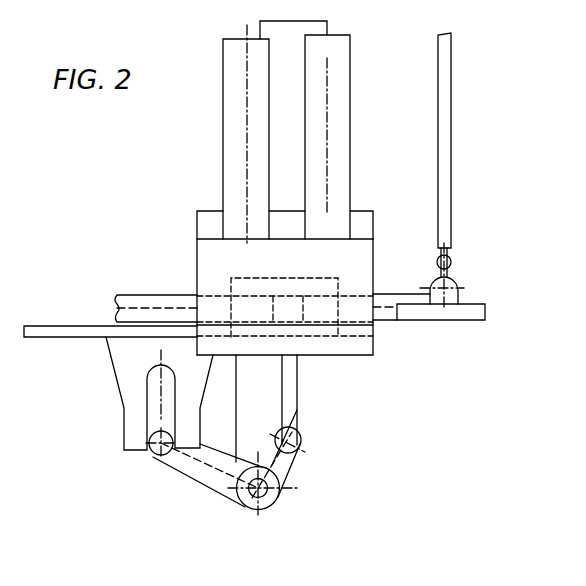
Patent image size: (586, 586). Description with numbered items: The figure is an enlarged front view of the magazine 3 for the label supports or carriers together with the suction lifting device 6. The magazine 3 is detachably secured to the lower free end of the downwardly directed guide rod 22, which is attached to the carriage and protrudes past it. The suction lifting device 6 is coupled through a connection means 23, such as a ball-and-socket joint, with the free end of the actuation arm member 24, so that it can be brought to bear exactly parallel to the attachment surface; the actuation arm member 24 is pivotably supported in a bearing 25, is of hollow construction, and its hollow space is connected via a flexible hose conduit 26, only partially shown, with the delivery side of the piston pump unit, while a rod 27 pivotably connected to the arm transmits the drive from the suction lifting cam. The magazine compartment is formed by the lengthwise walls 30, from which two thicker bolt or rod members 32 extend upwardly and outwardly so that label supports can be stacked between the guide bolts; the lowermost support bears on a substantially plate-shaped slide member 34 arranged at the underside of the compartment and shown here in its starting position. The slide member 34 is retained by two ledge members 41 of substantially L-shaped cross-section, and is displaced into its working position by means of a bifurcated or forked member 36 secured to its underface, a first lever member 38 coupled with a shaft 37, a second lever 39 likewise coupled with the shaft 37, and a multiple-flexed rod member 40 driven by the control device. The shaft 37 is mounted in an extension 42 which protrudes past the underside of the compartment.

The magazine 3 is at (188, 220).
The suction lifting device 6 is at (447, 313).
The guide rod 22 is at (288, 71).
The connection means 23 is at (449, 292).
The actuation arm member 24 is at (390, 302).
The bearing 25 is at (231, 279).
The flexible hose conduit 26 is at (145, 303).
The rod 27 is at (445, 133).
The lengthwise walls 30 is at (207, 252).
The thicker bolt or rod members 32 is at (267, 117).
The slide member 34 is at (72, 332).
The bifurcated or forked member 36 is at (128, 372).
The shaft 37 is at (268, 505).
The first lever member 38 is at (197, 468).
The second lever 39 is at (292, 462).
The multiple-flexed rod member 40 is at (293, 372).
The ledge members 41 is at (362, 348).
The extension 42 is at (268, 402).